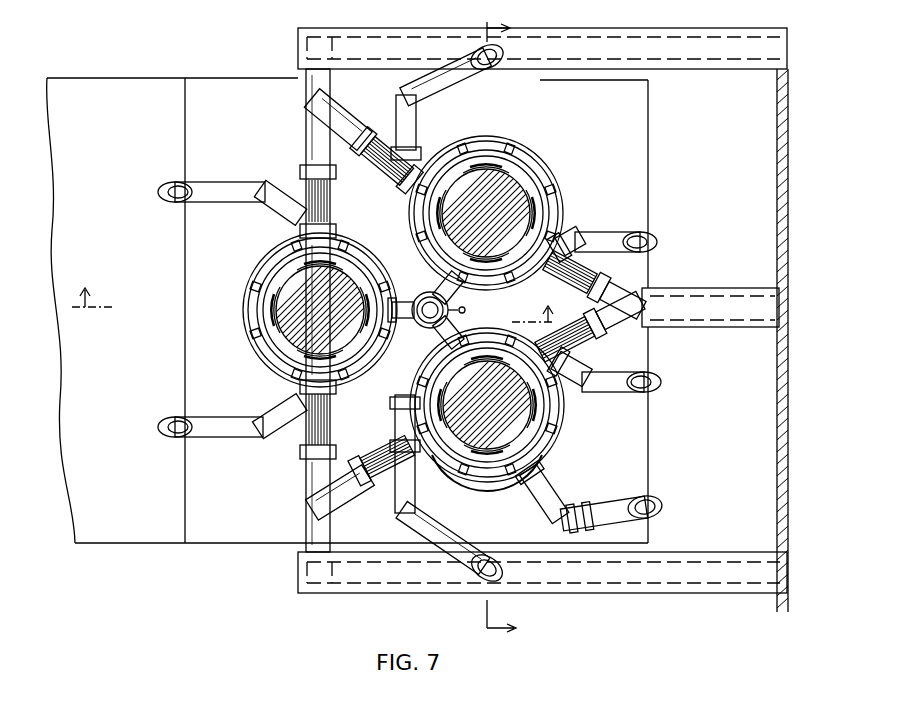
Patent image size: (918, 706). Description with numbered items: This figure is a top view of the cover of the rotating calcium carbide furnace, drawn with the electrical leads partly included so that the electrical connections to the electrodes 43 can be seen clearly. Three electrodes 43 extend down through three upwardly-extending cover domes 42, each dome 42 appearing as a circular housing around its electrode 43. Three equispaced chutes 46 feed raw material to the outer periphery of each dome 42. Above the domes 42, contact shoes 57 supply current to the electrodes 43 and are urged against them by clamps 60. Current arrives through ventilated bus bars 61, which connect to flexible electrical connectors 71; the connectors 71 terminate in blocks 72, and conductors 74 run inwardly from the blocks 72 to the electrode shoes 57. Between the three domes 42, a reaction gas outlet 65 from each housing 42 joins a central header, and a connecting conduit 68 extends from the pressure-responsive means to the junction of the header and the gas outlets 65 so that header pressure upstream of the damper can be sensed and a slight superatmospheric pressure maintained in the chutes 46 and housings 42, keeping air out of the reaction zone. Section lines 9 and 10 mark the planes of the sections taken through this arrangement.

The section line 9- 9 is at (503, 331).
The section line 10- 10 is at (315, 293).
The cover dome 42 is at (544, 168).
The electrode 43 is at (403, 309).
The chute 46 is at (396, 118).
The contact shoe 57 is at (530, 452).
The clamp 60 is at (548, 188).
The ventilated bus bar 61 is at (306, 90).
The reaction gas outlet 65 is at (428, 292).
The connecting conduit 68 is at (465, 310).
The flexible electrical connector 71 is at (334, 191).
The block 72 is at (408, 186).
The conductor 74 is at (548, 424).